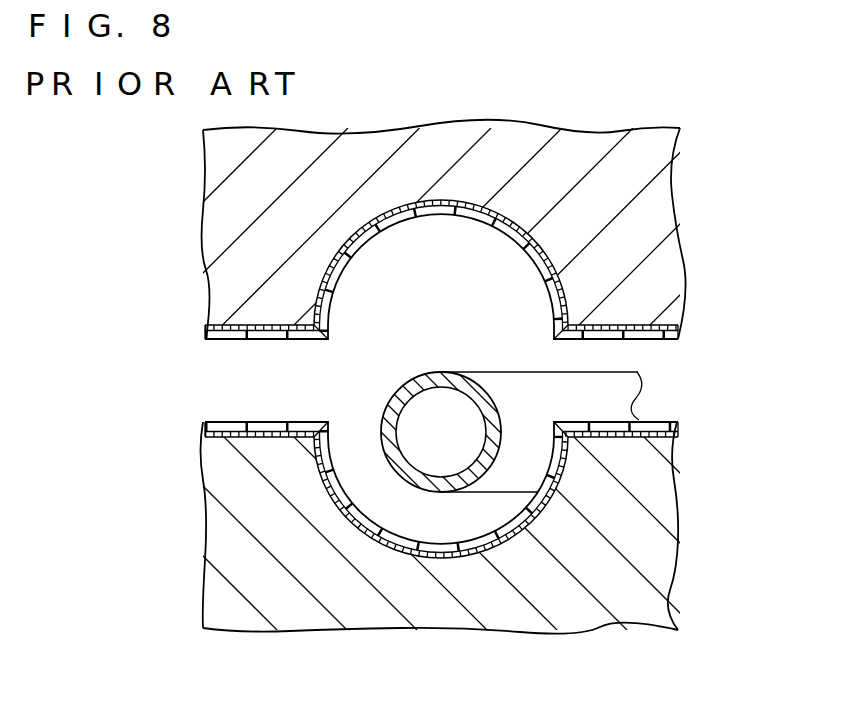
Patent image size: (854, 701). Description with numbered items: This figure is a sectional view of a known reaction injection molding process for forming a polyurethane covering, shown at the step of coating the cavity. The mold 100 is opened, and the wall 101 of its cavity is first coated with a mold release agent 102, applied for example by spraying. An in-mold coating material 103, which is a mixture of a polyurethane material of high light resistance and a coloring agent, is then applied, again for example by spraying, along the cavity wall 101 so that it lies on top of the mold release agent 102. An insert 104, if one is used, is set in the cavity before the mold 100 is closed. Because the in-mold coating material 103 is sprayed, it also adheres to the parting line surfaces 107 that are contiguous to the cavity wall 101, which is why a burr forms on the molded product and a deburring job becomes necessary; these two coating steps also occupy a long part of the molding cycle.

The mold 100 is at (213, 173).
The cavity wall 101 is at (363, 245).
The mold release agent 102 is at (443, 210).
The in-mold coating material 103 is at (550, 283).
The insert 104 is at (395, 405).
The parting line surfaces 107 is at (247, 330).